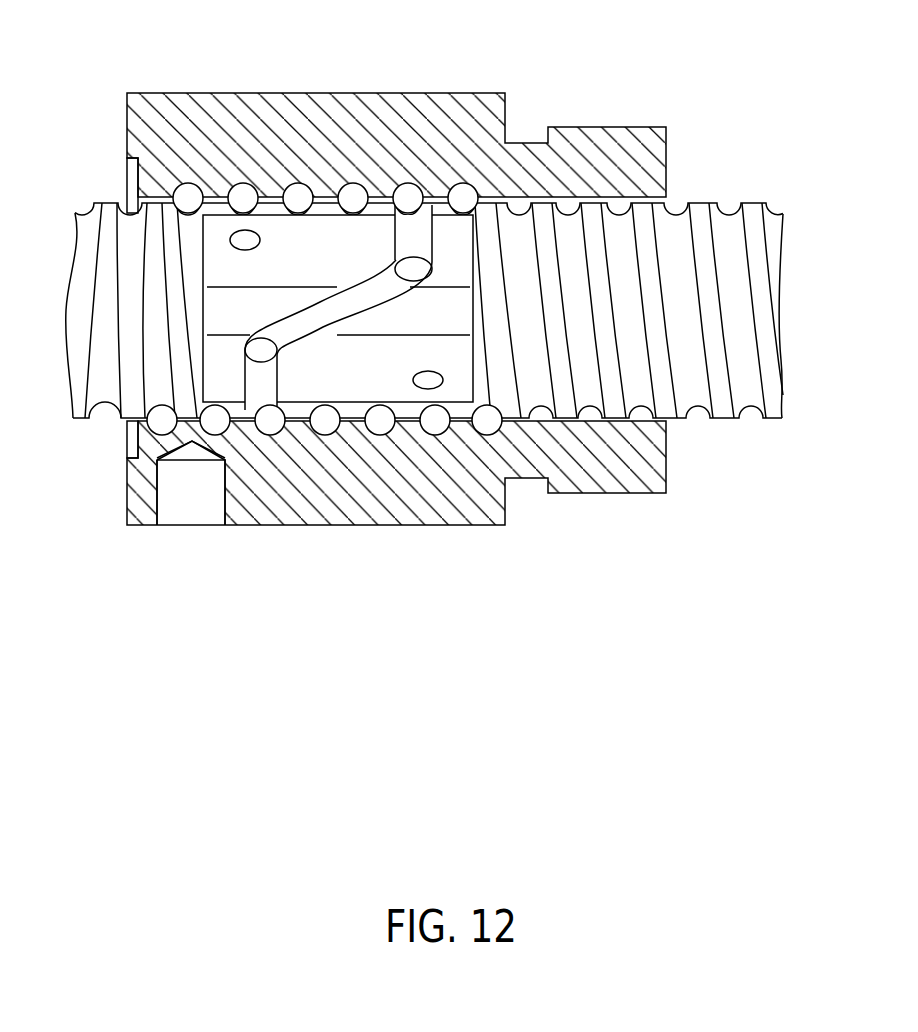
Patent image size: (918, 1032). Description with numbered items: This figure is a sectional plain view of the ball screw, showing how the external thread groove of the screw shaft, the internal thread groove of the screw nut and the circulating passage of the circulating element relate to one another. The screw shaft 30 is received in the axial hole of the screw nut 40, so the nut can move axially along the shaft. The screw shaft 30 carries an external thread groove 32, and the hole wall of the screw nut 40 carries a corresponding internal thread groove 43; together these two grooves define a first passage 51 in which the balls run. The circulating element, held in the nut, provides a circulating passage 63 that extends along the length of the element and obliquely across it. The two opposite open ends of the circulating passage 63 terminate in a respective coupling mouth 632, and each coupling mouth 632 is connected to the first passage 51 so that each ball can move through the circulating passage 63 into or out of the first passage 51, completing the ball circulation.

The screw shaft 30 is at (123, 375).
The external thread groove 32 is at (434, 210).
The screw nut 40 is at (184, 103).
The internal thread groove 43 is at (389, 188).
The first passage 51 is at (407, 193).
The circulating passage 63 is at (358, 298).
The coupling mouth 632 is at (435, 242).